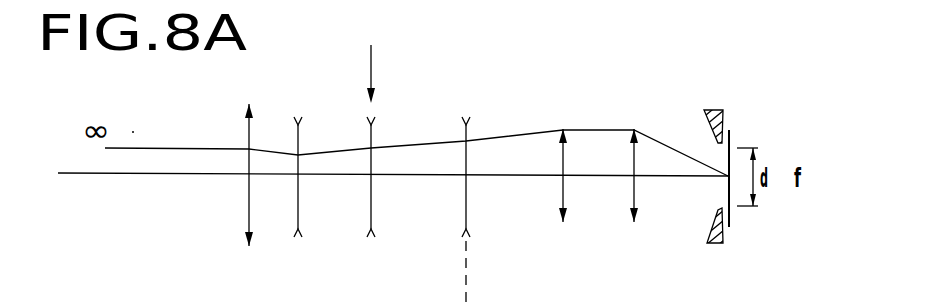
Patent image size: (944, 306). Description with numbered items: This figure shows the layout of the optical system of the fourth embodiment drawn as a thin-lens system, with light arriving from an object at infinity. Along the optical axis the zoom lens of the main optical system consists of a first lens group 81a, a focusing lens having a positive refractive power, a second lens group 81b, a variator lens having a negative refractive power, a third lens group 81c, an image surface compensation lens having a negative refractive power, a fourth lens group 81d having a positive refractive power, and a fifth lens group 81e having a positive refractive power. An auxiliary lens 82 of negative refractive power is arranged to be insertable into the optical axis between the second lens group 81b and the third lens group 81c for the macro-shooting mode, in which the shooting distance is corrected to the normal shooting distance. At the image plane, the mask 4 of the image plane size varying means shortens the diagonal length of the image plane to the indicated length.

The first lens group 81a is at (251, 201).
The second lens group 81b is at (299, 201).
The auxiliary lens 82 is at (372, 201).
The third lens group 81c is at (467, 210).
The fourth lens group 81d is at (565, 196).
The fifth lens group 81e is at (636, 196).
The mask 4 is at (707, 132).